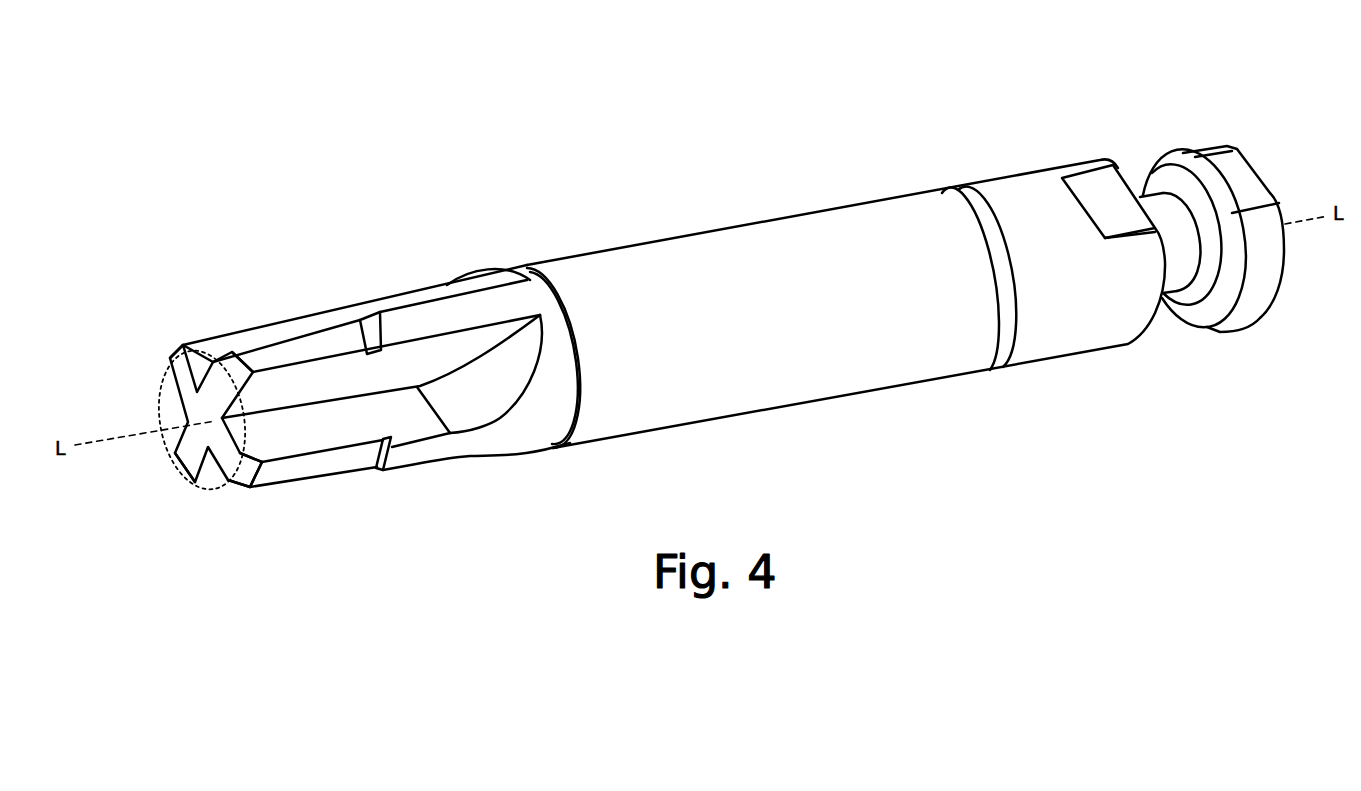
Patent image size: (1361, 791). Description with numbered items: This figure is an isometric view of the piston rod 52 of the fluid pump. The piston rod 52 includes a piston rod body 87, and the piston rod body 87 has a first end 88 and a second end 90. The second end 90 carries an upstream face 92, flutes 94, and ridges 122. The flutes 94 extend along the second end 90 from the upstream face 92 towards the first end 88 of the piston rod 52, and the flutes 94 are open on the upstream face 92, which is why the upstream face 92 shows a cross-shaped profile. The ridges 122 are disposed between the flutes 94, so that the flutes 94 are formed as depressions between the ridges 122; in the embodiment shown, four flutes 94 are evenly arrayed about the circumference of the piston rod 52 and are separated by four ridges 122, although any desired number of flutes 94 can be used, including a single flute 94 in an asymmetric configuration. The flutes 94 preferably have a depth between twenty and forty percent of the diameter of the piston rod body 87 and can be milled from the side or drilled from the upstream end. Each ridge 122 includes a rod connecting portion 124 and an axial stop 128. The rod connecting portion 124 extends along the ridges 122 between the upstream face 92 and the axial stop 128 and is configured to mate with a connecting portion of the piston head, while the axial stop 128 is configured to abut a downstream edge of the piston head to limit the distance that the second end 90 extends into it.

The piston rod 52 is at (746, 140).
The piston rod body 87 is at (814, 260).
The first end 88 is at (1038, 228).
The second end 90 is at (534, 268).
The upstream face 92 is at (205, 413).
The flutes 94 is at (362, 331).
The ridges 122 is at (426, 315).
The rod connecting portion 124 is at (257, 347).
The axial stop 128 is at (313, 320).